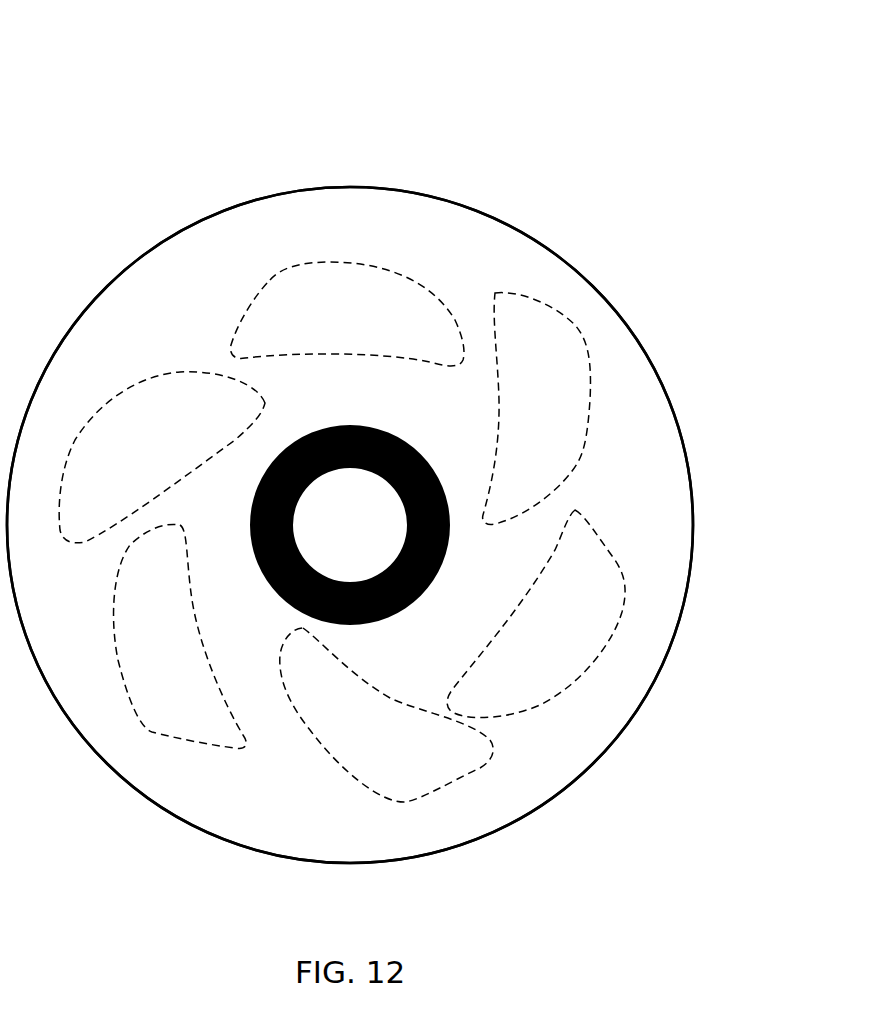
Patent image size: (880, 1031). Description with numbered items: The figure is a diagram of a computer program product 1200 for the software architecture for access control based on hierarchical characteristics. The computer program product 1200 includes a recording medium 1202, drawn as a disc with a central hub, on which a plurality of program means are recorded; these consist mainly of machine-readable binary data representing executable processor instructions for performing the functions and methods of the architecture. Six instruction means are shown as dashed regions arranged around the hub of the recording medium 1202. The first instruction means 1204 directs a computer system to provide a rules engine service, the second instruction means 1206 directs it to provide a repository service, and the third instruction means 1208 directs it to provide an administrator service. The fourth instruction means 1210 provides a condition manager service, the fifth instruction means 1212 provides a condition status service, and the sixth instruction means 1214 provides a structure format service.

The computer program product 1200 is at (592, 206).
The recording medium 1202 is at (382, 838).
The first instruction means 1204 is at (326, 262).
The second instruction means 1206 is at (578, 460).
The third instruction means 1208 is at (617, 569).
The fourth instruction means 1210 is at (401, 702).
The fifth instruction means 1212 is at (201, 740).
The sixth instruction means 1214 is at (147, 382).